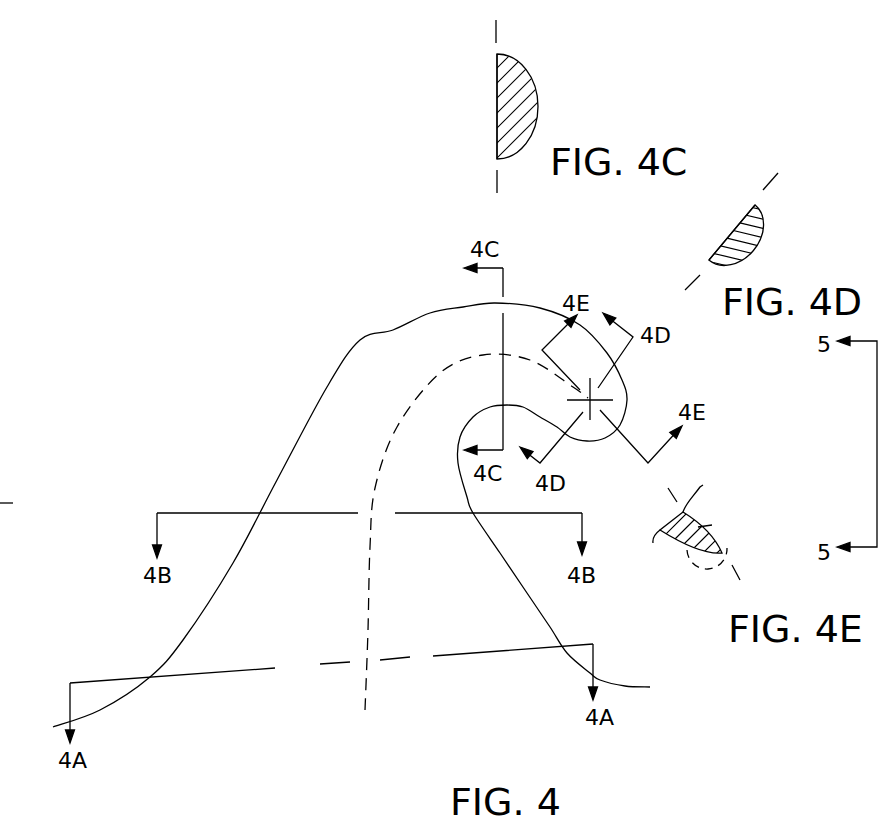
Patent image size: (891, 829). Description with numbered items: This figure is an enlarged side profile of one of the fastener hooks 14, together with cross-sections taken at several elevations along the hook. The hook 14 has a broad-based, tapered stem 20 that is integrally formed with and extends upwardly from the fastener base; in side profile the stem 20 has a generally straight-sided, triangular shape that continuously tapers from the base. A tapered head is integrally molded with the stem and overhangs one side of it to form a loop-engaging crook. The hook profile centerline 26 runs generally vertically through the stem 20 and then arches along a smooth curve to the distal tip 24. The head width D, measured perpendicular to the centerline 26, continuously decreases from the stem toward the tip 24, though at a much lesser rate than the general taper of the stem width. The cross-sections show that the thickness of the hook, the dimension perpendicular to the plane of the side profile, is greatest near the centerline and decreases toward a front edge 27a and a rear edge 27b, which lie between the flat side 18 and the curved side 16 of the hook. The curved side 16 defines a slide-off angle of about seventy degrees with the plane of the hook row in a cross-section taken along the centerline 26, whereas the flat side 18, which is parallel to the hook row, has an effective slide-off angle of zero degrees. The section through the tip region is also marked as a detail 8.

In FIG. 4, the hook 14 is at (297, 312).
In FIG. 4, the stem 20 is at (321, 587).
In FIG. 4, the hook profile centerline 26 is at (370, 628).
In FIG. 4, the distal tip 24 is at (642, 411).
In FIG. 4, the front edge 27a is at (548, 627).
In FIG. 4C, the front edge 27a is at (493, 161).
In FIG. 4D, the front edge 27a is at (702, 262).
In FIG. 4, the rear edge 27b is at (182, 643).
In FIG. 4C, the rear edge 27b is at (500, 43).
In FIG. 4D, the rear edge 27b is at (763, 206).
In FIG. 4, the head width D is at (468, 415).
In FIG. 4C, the curved side 16 is at (541, 104).
In FIG. 4D, the curved side 16 is at (754, 244).
In FIG. 4C, the flat side 18 is at (495, 98).
In FIG. 4D, the flat side 18 is at (727, 236).
In FIG. 4E, the hook section 8 is at (722, 537).